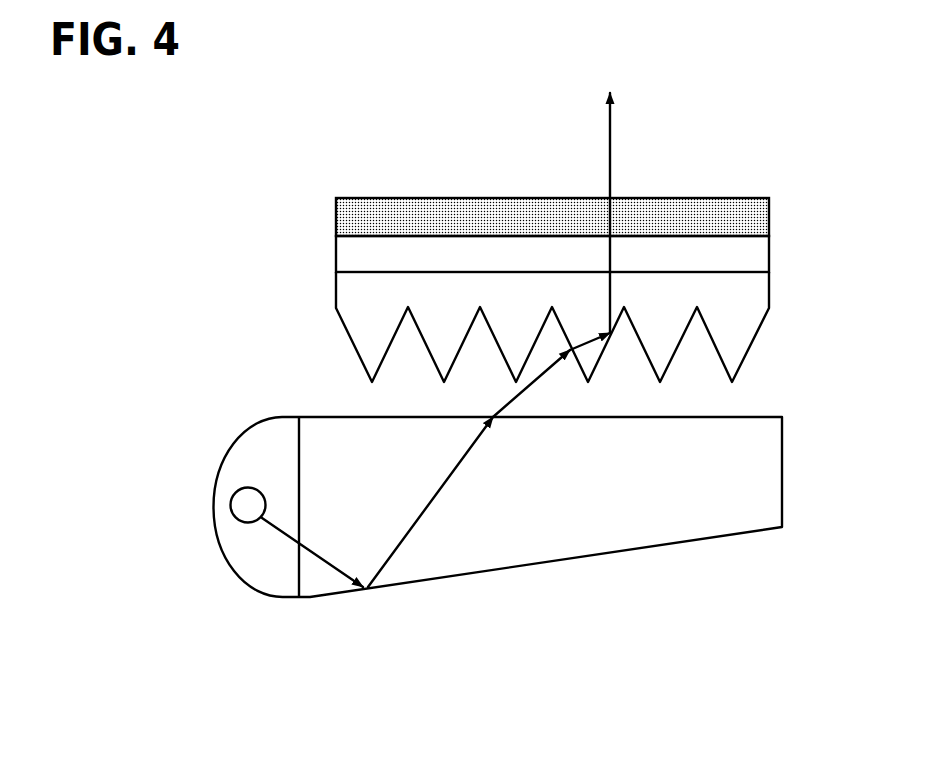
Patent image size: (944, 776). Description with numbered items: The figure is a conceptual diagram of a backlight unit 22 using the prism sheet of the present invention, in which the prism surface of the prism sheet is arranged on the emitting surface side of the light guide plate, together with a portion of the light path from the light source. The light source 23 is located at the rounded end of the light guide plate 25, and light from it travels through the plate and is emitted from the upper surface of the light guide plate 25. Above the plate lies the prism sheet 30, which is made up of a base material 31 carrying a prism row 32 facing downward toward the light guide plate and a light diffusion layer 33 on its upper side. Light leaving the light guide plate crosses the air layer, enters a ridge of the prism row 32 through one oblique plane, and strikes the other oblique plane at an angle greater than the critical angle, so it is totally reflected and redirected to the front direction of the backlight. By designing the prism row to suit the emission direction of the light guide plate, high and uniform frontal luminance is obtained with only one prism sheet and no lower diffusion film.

The prism sheet 30 is at (807, 198).
The light diffusion layer 33 is at (358, 220).
The base material 31 is at (363, 256).
The prism row 32 is at (363, 295).
The backlight unit 22 is at (195, 201).
The light guide plate 25 is at (733, 501).
The light source 23 is at (250, 512).